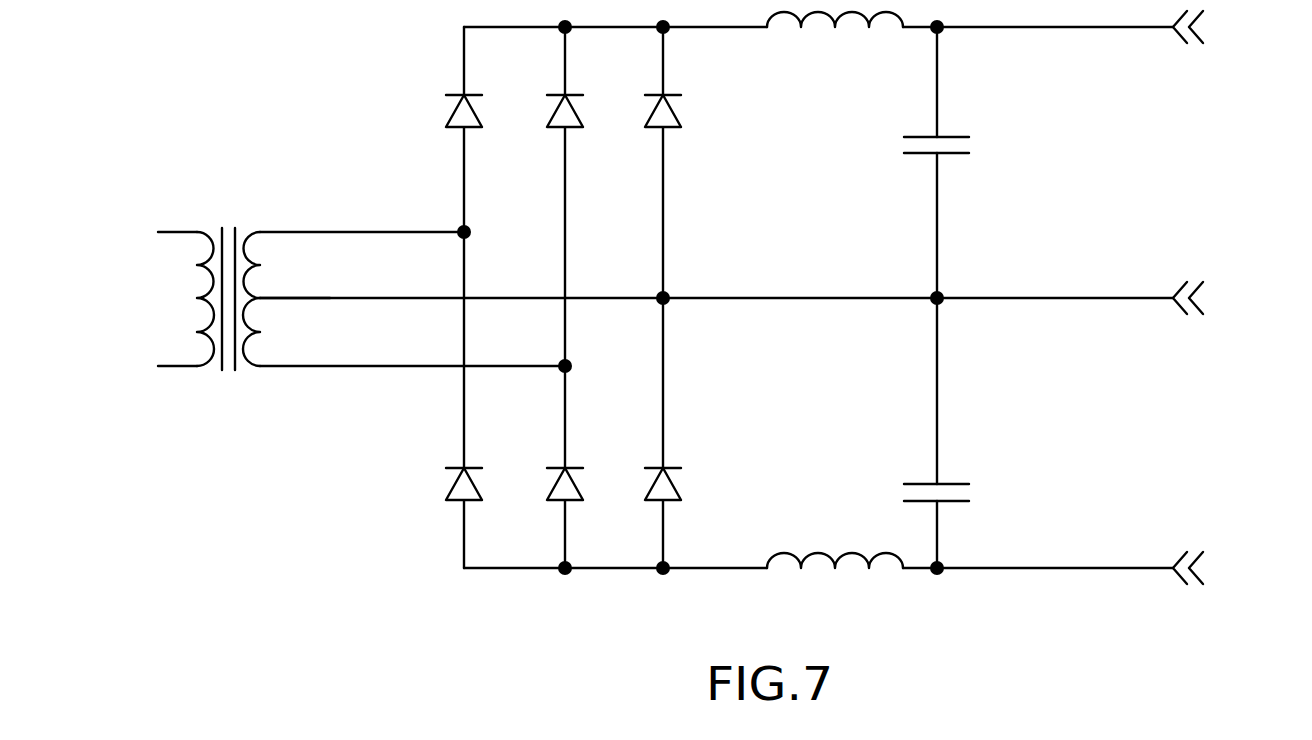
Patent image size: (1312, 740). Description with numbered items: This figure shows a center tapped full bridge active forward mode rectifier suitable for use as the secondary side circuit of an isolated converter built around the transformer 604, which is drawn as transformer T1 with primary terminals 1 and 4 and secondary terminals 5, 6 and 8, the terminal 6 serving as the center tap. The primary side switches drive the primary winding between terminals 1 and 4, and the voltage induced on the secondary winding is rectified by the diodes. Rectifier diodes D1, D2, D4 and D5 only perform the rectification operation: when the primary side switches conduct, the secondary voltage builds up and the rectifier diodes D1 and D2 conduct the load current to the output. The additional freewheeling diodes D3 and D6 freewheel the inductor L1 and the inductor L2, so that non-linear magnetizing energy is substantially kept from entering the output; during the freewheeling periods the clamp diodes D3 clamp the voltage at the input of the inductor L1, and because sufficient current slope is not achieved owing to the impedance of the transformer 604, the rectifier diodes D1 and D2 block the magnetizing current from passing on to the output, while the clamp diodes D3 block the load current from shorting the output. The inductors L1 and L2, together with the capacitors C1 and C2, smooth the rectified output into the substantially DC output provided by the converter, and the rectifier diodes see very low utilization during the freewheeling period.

The transformer 604 is at (285, 178).
The transformer primary winding terminal 1 is at (165, 219).
The transformer primary winding terminal 4 is at (165, 355).
The transformer secondary winding terminal 5 is at (362, 219).
The transformer secondary winding center tap terminal 6 is at (295, 286).
The transformer secondary winding terminal 8 is at (412, 354).
The transformer T1 is at (228, 284).
The rectifier diode D1 is at (479, 95).
The rectifier diode D2 is at (580, 95).
The freewheeling diode D3 is at (678, 95).
The rectifier diode D4 is at (479, 467).
The rectifier diode D5 is at (580, 467).
The freewheeling diode D6 is at (678, 467).
The inductor L1 is at (815, 13).
The inductor L2 is at (815, 553).
The capacitor C1 is at (944, 128).
The capacitor C2 is at (944, 476).